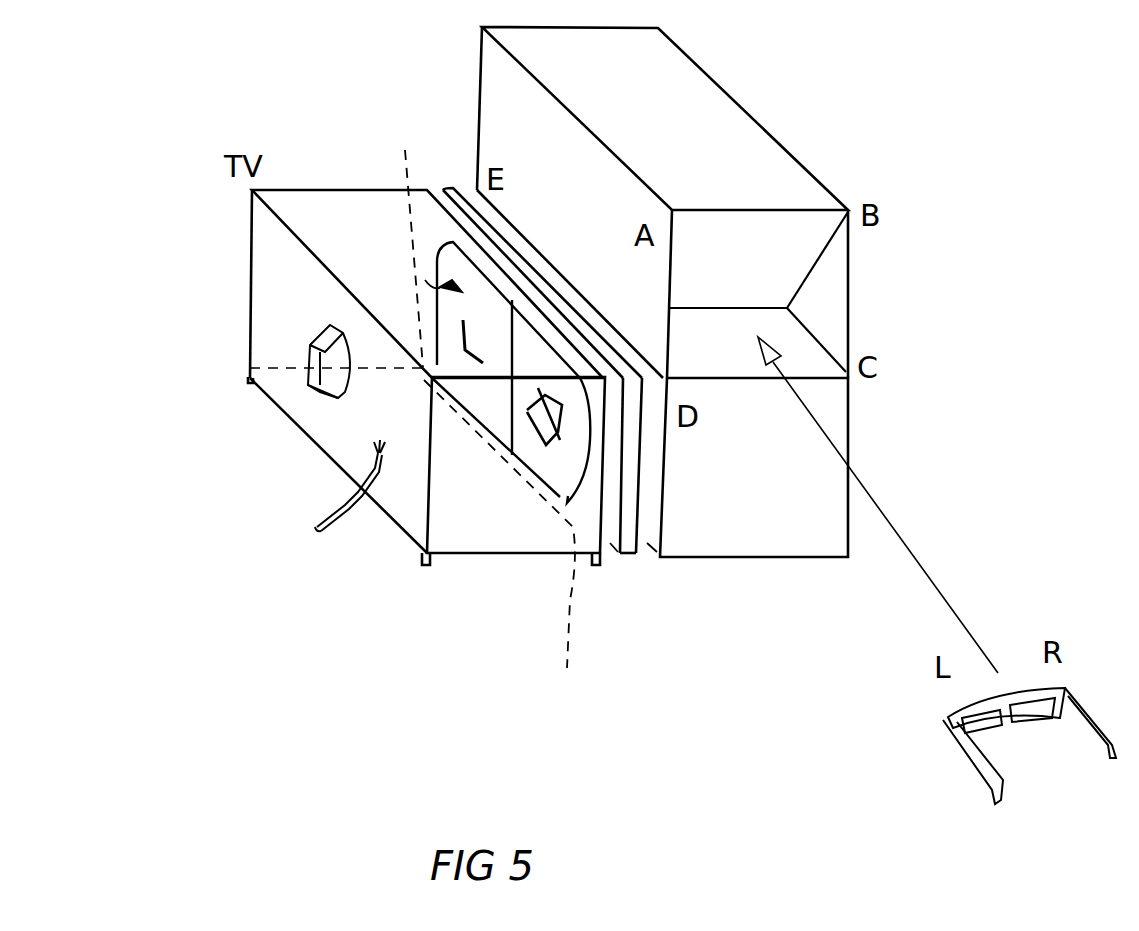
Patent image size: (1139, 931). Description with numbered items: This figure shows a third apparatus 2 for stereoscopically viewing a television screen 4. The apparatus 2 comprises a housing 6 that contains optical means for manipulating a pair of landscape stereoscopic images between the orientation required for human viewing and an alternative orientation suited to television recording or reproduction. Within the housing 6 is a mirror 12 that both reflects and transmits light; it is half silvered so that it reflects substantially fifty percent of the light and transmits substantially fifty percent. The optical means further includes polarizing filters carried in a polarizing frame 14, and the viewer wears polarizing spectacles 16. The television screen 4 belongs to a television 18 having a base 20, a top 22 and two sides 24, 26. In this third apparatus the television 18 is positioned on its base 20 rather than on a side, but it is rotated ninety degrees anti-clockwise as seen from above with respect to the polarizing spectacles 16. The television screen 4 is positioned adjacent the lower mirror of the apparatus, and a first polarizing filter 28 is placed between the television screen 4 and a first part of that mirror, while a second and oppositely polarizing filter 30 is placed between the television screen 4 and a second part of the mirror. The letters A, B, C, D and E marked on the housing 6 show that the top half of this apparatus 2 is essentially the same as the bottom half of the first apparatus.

The apparatus 2 is at (774, 103).
The television screen 4 is at (525, 462).
The housing 6 is at (858, 437).
The mirror 12 is at (806, 244).
The polarizing frame 14 is at (630, 557).
The polarizing spectacles 16 is at (952, 759).
The television 18 is at (385, 365).
The base 20 is at (323, 433).
The top 22 is at (330, 210).
The side 24 is at (250, 245).
The side 26 is at (450, 513).
The first polarizing filter 28 is at (427, 238).
The second polarizing filter 30 is at (499, 548).